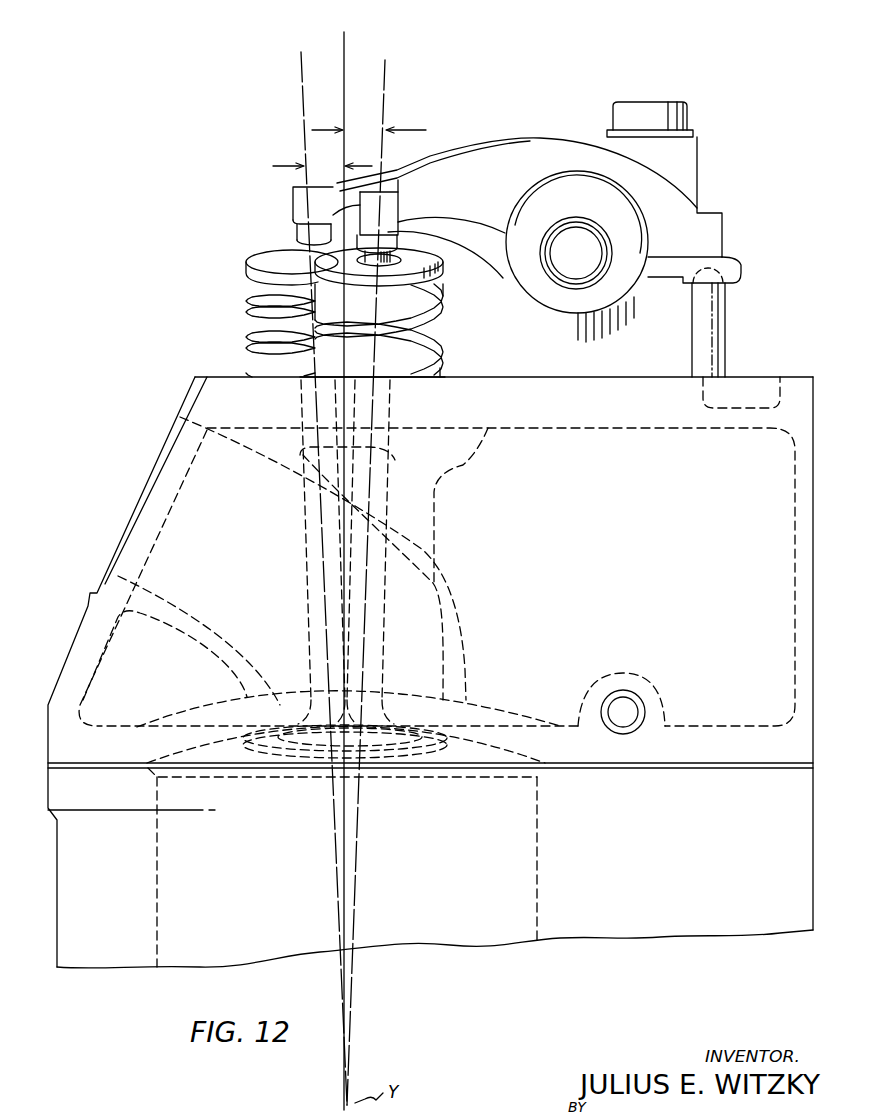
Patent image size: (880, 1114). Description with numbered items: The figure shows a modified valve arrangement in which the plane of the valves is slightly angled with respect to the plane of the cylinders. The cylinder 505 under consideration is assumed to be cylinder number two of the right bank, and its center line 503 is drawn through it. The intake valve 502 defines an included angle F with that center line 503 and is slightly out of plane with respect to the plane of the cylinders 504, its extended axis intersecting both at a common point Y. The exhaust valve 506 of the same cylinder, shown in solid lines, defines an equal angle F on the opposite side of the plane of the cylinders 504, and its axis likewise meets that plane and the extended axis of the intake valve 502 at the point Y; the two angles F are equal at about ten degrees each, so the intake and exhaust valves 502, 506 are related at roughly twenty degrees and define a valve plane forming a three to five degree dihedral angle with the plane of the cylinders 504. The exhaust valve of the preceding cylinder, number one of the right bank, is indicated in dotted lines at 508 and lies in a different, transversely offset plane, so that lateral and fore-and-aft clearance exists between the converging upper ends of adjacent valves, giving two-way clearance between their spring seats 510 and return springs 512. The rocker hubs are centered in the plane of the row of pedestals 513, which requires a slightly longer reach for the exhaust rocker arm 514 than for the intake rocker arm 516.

The intake valve 502 is at (440, 330).
The center line of cylinder 503 is at (344, 40).
The plane of the cylinders 504 is at (345, 888).
The cylinder 505 is at (160, 840).
The exhaust valve 506 is at (290, 330).
The exhaust valve of preceding cylinder 508 is at (275, 305).
The spring seat 510 is at (425, 265).
The return spring 512 is at (415, 352).
The pedestal 513 is at (700, 170).
The exhaust rocker arm 514 is at (288, 196).
The intake rocker arm 516 is at (553, 146).